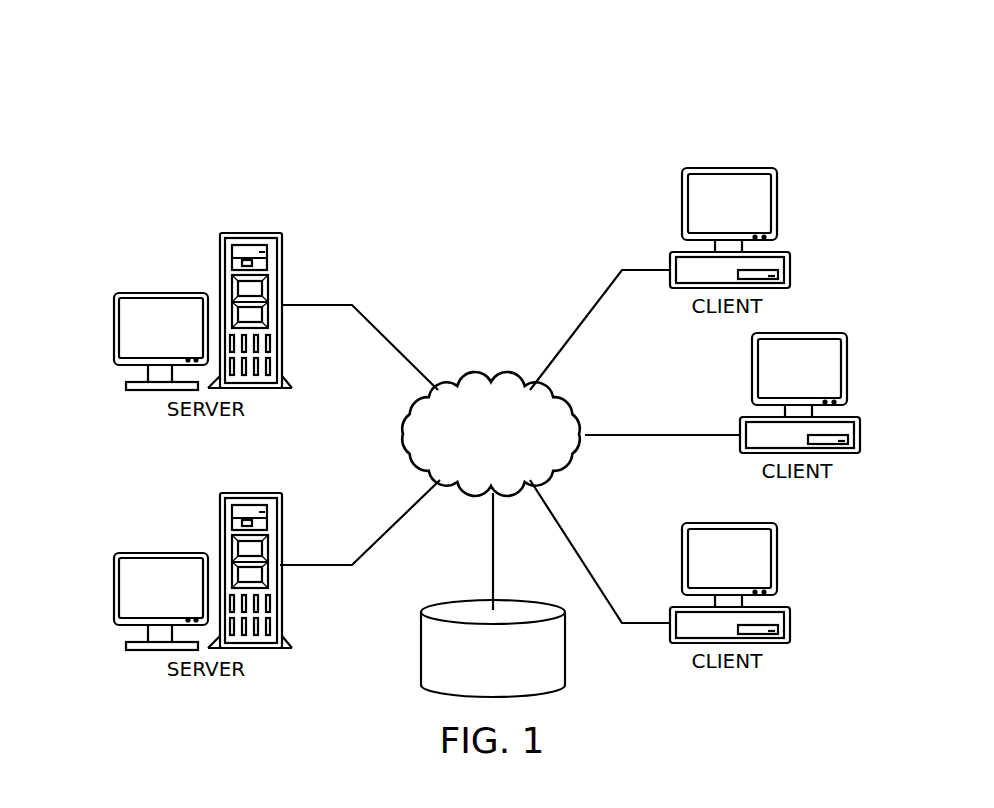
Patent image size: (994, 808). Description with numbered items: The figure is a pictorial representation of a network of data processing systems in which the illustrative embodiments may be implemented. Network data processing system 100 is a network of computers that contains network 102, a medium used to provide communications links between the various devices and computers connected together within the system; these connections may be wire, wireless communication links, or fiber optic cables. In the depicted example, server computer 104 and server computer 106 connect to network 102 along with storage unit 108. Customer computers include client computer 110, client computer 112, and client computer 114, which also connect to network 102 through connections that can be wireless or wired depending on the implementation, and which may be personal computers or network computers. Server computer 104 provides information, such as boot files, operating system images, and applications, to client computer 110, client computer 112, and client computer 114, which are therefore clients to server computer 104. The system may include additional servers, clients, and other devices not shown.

The network data processing system 100 is at (285, 97).
The network 102 is at (466, 384).
The server computer 104 is at (113, 328).
The server computer 106 is at (112, 588).
The storage unit 108 is at (420, 645).
The client computer 110 is at (790, 260).
The client computer 112 is at (860, 446).
The client computer 114 is at (790, 636).